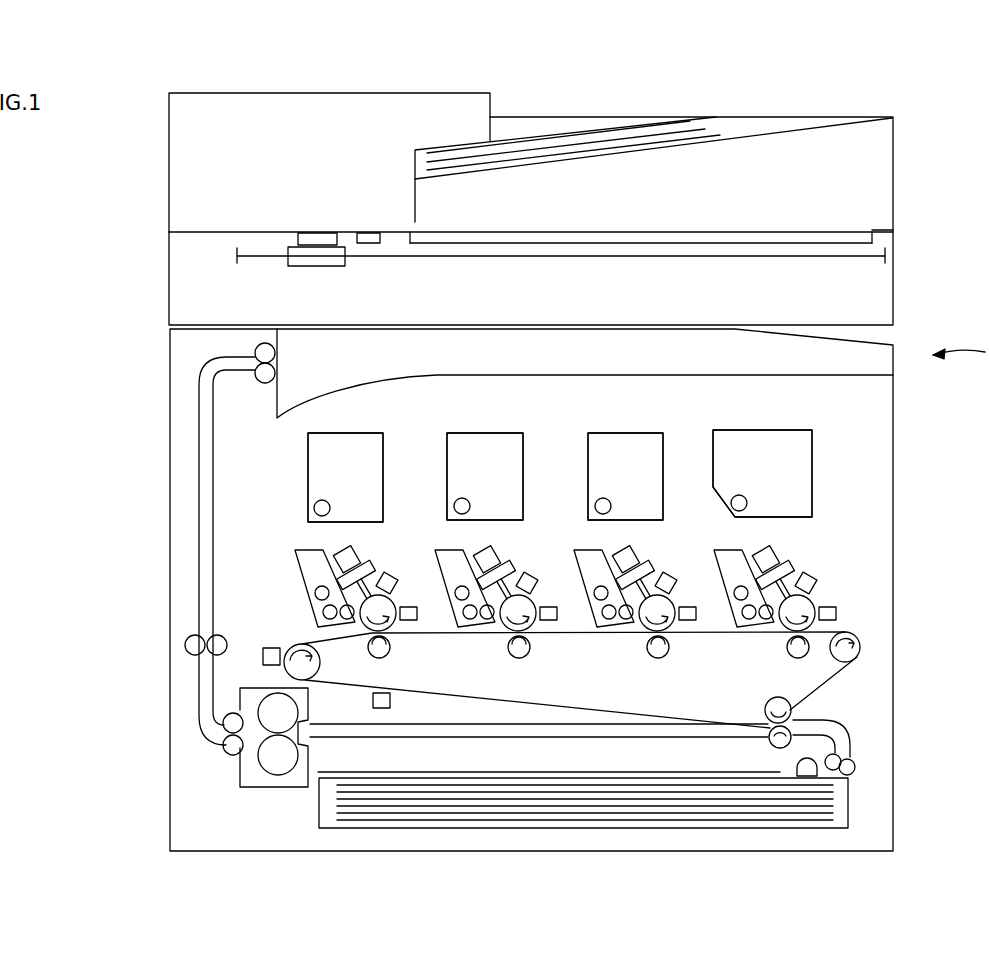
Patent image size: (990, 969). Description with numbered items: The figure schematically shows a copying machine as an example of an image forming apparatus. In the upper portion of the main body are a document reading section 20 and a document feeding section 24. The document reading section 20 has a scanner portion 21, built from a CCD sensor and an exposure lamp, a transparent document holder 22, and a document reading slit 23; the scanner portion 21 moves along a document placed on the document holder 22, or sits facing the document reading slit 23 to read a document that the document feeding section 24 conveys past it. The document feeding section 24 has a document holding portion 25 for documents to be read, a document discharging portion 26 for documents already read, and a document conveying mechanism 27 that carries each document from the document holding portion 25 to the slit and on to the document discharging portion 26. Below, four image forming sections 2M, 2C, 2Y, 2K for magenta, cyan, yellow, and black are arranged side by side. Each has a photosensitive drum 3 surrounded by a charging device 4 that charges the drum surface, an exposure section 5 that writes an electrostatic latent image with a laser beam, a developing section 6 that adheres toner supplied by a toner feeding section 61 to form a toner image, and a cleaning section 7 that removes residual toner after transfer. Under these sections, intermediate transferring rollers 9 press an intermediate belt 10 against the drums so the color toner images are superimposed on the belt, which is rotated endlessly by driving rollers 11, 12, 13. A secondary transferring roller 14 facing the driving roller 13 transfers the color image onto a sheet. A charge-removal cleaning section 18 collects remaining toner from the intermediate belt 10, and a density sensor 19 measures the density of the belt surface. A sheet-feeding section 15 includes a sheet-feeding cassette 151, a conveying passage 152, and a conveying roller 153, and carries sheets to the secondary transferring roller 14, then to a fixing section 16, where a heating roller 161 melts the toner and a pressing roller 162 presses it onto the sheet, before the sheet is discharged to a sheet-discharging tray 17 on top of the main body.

The document reading section 20 is at (223, 290).
The scanner portion 21 is at (318, 268).
The document holder 22 is at (895, 237).
The document reading slit 23 is at (317, 237).
The document feeding section 24 is at (582, 117).
The document holding portion 25 is at (750, 121).
The document discharging portion 26 is at (780, 222).
The document conveying mechanism 27 is at (270, 164).
The sheet-discharging tray 17 is at (413, 375).
The conveying passage 152 is at (213, 490).
The conveying roller 153 is at (185, 645).
The image forming section 2M is at (352, 432).
The image forming section 2C is at (490, 432).
The image forming section 2Y is at (632, 432).
The image forming section 2K is at (775, 427).
The toner feeding section 61 is at (383, 460).
The photosensitive drum 3 is at (595, 632).
The charging device 4 is at (604, 566).
The exposure section 5 is at (566, 564).
The developing section 6 is at (534, 573).
The cleaning section 7 is at (626, 590).
The intermediate transferring roller 9 is at (577, 657).
The intermediate belt 10 is at (830, 683).
The driving roller 11 is at (861, 647).
The driving roller 12 is at (315, 677).
The driving roller 13 is at (766, 704).
The secondary transferring roller 14 is at (770, 742).
The charge-removal cleaning section 18 is at (272, 648).
The density sensor 19 is at (392, 700).
The fixing section 16 is at (292, 790).
The heating roller 161 is at (265, 775).
The pressing roller 162 is at (262, 697).
The sheet-feeding section 15 is at (857, 813).
The sheet-feeding cassette 151 is at (767, 832).